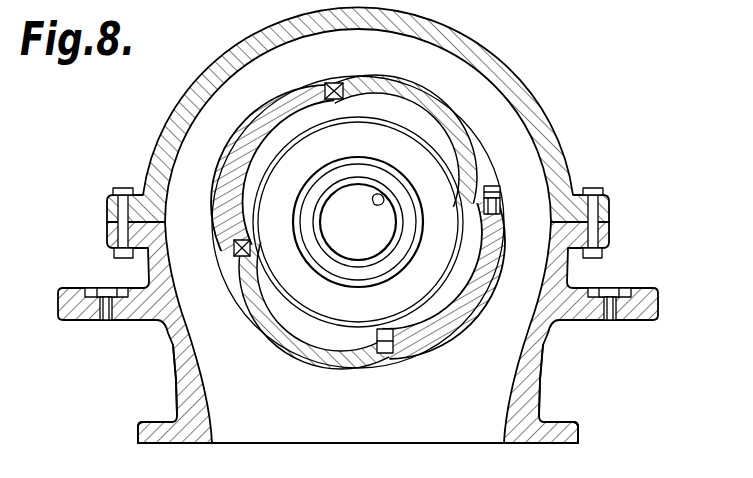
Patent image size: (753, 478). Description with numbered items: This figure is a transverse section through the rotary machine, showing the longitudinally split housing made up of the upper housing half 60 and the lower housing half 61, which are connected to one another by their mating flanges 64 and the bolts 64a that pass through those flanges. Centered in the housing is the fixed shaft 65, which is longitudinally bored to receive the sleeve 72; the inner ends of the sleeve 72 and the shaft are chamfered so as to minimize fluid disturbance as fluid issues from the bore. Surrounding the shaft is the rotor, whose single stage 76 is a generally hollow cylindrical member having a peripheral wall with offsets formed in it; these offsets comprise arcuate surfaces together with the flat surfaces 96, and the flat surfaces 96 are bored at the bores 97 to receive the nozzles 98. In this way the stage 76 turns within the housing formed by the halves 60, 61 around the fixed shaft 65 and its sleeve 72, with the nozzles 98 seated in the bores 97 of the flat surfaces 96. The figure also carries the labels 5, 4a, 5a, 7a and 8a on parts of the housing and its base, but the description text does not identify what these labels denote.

The upper housing half 60 is at (512, 78).
The single stage 76 is at (390, 80).
The rotor 5 is at (476, 165).
The sleeve 72 is at (380, 200).
The fixed shaft 65 is at (414, 198).
The flat surfaces 96 is at (494, 186).
The nozzles 98 is at (500, 195).
The bores 97 is at (480, 208).
The mating flanges 64 is at (108, 210).
The bolts 64a is at (118, 188).
The base flange 4a is at (62, 303).
The flange bolt 5a is at (105, 318).
The lower housing half 61 is at (548, 362).
The foot 8a is at (150, 420).
The foot pad 7a is at (137, 433).